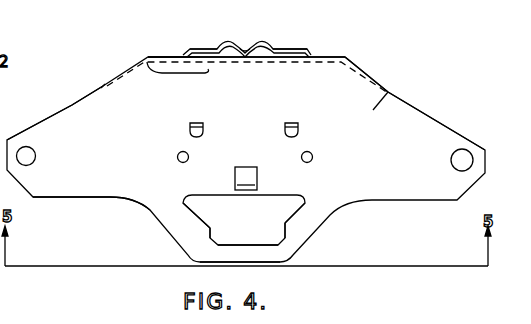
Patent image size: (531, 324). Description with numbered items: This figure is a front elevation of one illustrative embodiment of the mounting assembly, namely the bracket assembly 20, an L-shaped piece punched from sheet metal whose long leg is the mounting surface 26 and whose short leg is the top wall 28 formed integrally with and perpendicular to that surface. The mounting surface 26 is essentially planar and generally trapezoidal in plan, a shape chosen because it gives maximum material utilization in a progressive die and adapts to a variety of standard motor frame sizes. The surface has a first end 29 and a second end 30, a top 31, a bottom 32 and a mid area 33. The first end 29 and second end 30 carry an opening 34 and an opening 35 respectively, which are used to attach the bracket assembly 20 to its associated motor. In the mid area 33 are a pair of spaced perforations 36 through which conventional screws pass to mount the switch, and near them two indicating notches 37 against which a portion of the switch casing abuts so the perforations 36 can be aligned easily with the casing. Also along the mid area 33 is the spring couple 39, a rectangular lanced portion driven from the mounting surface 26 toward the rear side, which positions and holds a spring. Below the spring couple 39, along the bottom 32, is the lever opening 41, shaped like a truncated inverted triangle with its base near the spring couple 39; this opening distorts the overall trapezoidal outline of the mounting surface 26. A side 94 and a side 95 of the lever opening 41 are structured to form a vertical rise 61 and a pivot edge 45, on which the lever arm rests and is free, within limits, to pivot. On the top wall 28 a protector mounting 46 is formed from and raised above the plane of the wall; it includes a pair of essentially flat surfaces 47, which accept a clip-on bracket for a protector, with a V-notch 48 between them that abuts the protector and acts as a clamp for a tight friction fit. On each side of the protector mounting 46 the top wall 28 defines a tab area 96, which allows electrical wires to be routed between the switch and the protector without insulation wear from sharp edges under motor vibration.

The bracket assembly 20 is at (336, 73).
The mounting surface 26 is at (393, 90).
The top wall 28 is at (163, 60).
The first end 29 is at (423, 110).
The second end 30 is at (75, 123).
The top 31 is at (146, 62).
The bottom 32 is at (280, 256).
The mid area 33 is at (146, 215).
The opening 34 is at (32, 162).
The opening 35 is at (460, 150).
The perforations 36 is at (140, 217).
The indicating notches 37 is at (291, 123).
The spring couple 39 is at (257, 181).
The lever opening 41 is at (250, 210).
The pivot edge 45 is at (266, 229).
The protector mounting 46 is at (271, 44).
The flat surfaces 47 is at (268, 42).
The V-notch 48 is at (249, 37).
The vertical rise 61 is at (207, 217).
The side 94 is at (190, 226).
The side 95 is at (290, 222).
The tab area 96 is at (112, 78).